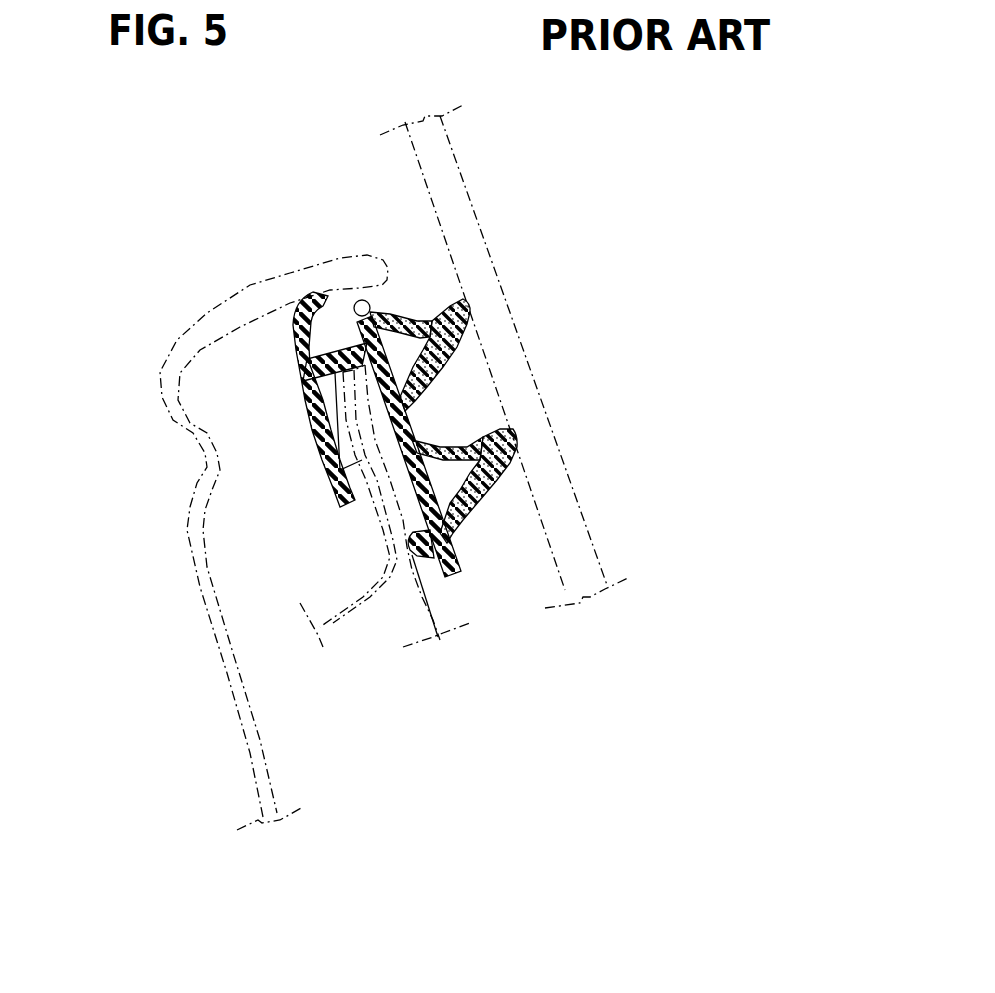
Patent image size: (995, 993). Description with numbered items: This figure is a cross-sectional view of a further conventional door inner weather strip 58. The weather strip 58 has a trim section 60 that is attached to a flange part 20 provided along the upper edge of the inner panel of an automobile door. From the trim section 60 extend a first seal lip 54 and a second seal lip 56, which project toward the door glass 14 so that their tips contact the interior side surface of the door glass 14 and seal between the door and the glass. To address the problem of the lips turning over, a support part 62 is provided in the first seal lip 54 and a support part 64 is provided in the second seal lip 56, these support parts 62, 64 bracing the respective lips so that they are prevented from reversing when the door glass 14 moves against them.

The door glass 14 is at (481, 222).
The flange part 20 is at (256, 542).
The first seal lip 54 is at (473, 317).
The second seal lip 56 is at (510, 463).
The door inner weather strip 58 is at (251, 387).
The trim section 60 is at (198, 399).
The support part 62 is at (403, 322).
The support part 64 is at (452, 441).